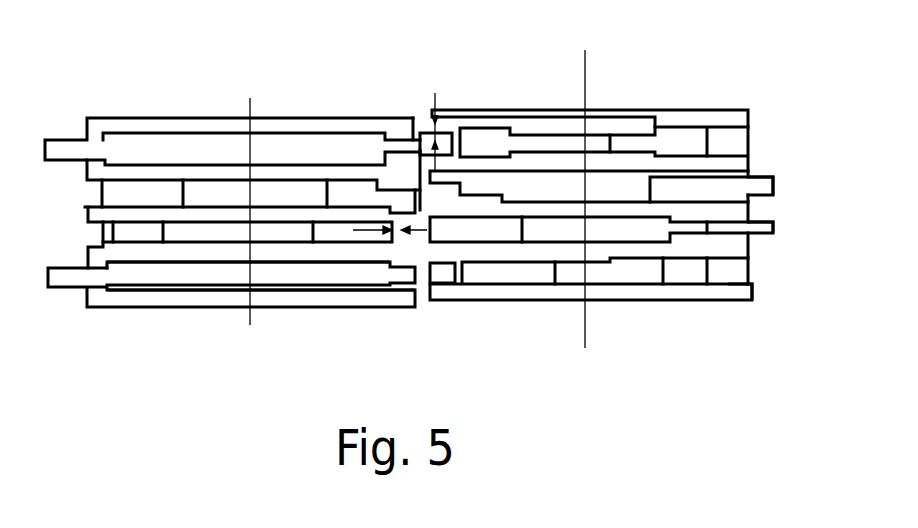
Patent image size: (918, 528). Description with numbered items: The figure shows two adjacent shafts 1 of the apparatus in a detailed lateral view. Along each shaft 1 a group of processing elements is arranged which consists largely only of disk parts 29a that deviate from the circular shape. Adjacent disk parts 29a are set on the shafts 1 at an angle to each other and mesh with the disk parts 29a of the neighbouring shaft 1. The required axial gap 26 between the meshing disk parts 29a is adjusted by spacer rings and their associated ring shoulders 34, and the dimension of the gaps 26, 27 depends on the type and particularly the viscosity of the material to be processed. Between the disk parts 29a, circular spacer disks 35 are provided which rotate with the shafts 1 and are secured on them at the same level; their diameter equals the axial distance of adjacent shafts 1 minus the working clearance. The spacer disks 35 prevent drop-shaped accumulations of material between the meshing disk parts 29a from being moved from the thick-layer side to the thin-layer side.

The shaft 1 is at (587, 335).
The axial gap 26 is at (441, 121).
The gap 27 is at (392, 228).
The ring shoulder 34 is at (655, 125).
The disk part 29a is at (713, 275).
The circular spacer disk 35 is at (780, 373).